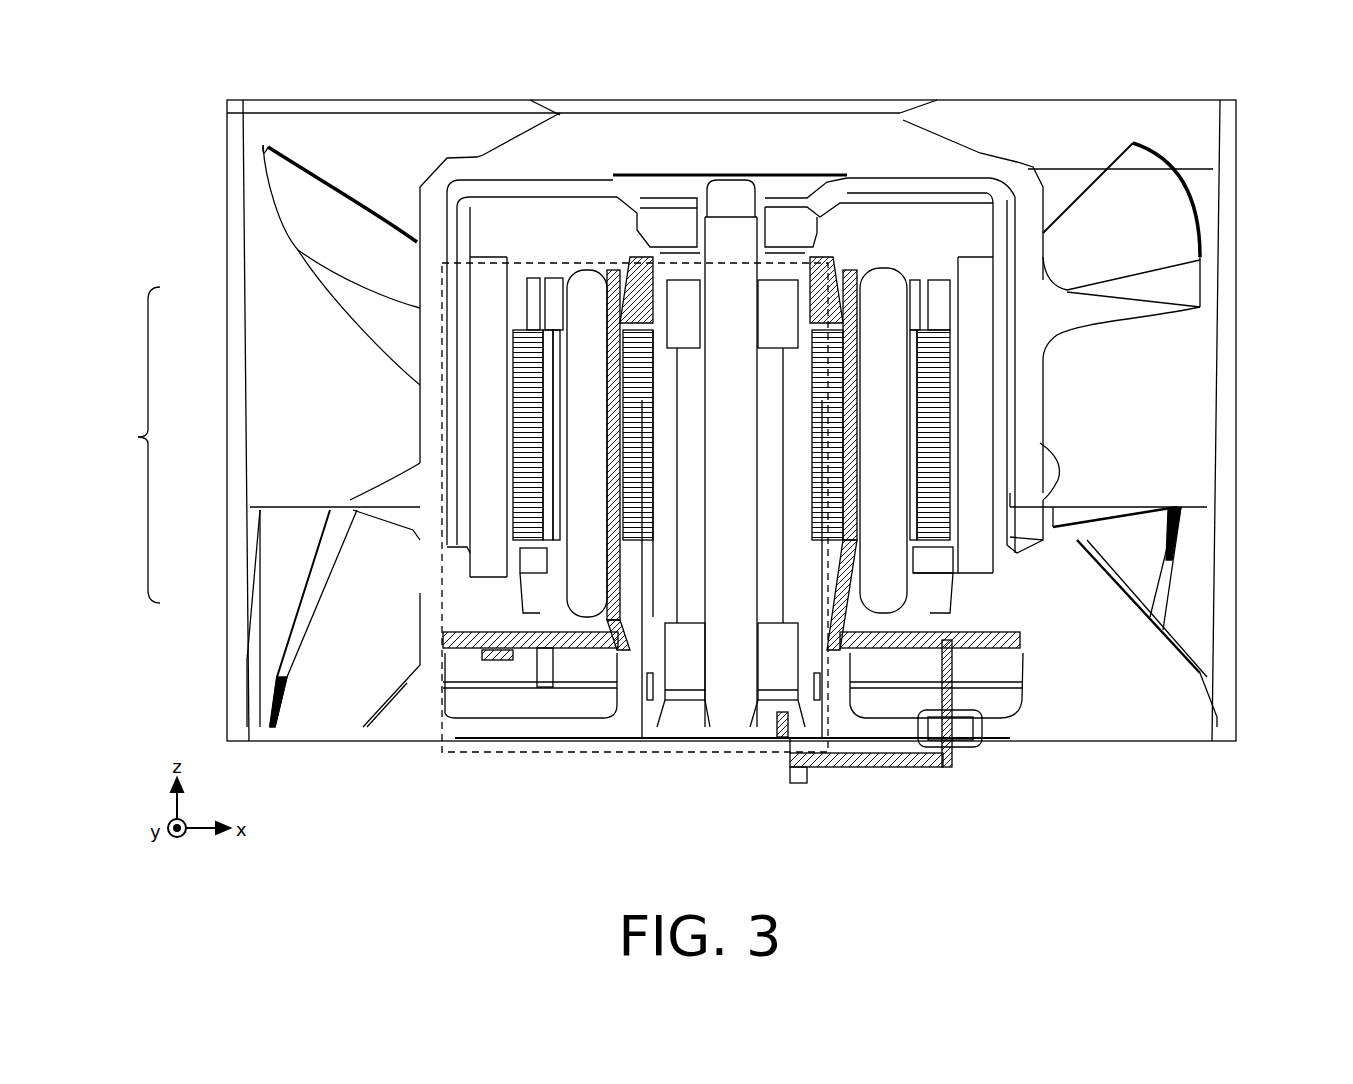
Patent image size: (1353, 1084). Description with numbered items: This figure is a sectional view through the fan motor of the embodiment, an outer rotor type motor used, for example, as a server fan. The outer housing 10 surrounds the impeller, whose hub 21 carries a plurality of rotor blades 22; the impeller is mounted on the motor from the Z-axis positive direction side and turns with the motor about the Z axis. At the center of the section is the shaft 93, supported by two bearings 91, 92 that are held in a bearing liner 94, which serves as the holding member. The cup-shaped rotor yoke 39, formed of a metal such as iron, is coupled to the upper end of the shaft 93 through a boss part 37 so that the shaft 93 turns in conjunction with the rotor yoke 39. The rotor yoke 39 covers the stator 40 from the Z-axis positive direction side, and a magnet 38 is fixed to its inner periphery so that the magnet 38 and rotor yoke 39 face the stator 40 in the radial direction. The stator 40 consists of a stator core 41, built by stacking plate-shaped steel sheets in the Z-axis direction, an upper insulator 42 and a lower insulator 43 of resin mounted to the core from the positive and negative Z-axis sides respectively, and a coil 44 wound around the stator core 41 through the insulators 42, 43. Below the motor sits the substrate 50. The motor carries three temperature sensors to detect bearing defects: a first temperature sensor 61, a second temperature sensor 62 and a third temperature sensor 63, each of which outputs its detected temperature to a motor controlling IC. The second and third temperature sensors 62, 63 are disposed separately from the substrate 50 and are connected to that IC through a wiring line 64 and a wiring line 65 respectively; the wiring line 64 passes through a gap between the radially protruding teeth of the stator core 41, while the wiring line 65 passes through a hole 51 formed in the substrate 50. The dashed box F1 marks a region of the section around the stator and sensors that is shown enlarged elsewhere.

The housing 10 is at (1012, 127).
The hub 21 is at (1030, 467).
The rotor blade 22 is at (1130, 187).
The boss part 37 is at (680, 190).
The magnet 38 is at (1000, 378).
The rotor yoke 39 is at (893, 190).
The stator 40 is at (528, 442).
The stator core 41 is at (535, 393).
The insulator 42 is at (530, 298).
The insulator 43 is at (527, 563).
The coil 44 is at (580, 478).
The substrate 50 is at (1005, 640).
The hole 51 is at (965, 752).
The first temperature sensor 61 is at (500, 662).
The second temperature sensor 62 is at (641, 255).
The third temperature sensor 63 is at (780, 740).
The wiring line 64 is at (603, 435).
The wiring line 65 is at (890, 762).
The bearing 91 is at (778, 300).
The bearing 92 is at (785, 660).
The shaft 93 is at (727, 740).
The bearing liner 94 is at (655, 655).
The region F1 is at (480, 263).